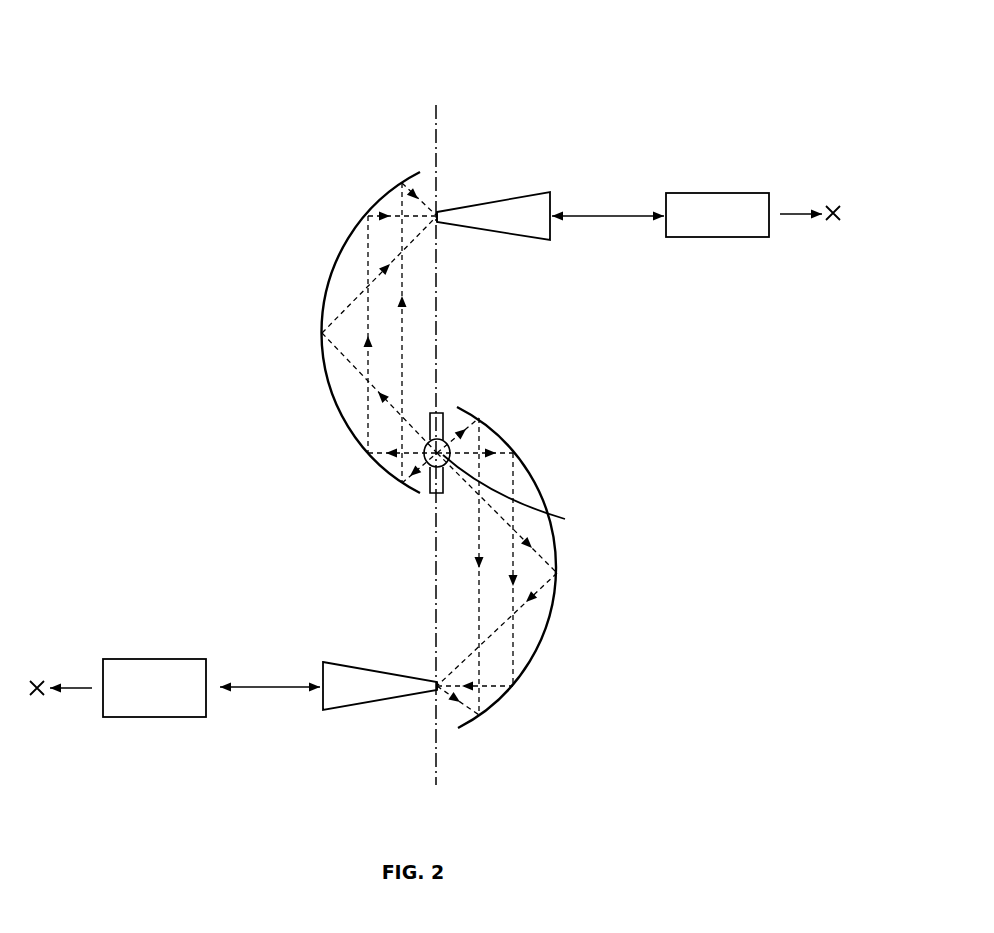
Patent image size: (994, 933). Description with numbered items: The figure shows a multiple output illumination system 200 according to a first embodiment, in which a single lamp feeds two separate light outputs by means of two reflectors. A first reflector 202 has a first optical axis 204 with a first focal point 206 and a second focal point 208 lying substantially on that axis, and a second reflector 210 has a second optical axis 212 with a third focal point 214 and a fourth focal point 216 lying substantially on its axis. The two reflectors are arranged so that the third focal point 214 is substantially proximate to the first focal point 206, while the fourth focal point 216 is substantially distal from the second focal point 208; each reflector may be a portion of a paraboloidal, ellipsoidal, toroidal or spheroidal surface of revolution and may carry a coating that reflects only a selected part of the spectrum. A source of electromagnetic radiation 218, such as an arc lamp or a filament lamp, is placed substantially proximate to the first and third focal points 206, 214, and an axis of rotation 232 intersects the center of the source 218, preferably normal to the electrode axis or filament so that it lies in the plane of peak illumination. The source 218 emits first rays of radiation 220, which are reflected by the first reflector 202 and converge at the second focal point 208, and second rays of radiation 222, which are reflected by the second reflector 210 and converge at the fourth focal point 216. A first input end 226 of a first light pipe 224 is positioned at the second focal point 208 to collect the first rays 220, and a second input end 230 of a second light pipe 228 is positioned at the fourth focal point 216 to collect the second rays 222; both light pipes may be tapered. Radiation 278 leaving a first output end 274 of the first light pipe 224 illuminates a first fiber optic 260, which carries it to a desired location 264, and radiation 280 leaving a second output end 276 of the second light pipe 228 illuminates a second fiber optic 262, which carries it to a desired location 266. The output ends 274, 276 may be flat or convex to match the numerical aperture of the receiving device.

The multiple output illumination system 200 is at (199, 52).
The first reflector 202 is at (532, 475).
The first optical axis 204 is at (440, 760).
The first focal point 206 is at (575, 493).
The second focal point 208 is at (428, 692).
The second reflector 210 is at (345, 245).
The second optical axis 212 is at (436, 158).
The third focal point 214 is at (575, 493).
The fourth focal point 216 is at (509, 194).
The source of electromagnetic radiation 218 is at (430, 499).
The first rays of radiation 220 is at (477, 600).
The second rays of radiation 222 is at (403, 320).
The first light pipe 224 is at (351, 674).
The first input end 226 is at (362, 712).
The second light pipe 228 is at (532, 224).
The second input end 230 is at (447, 212).
The axis of rotation 232 is at (548, 517).
The first fiber optic 260 is at (176, 670).
The second fiber optic 262 is at (710, 200).
The desired location 264 is at (37, 678).
The desired location 266 is at (835, 203).
The first output end 274 is at (313, 690).
The second output end 276 is at (560, 222).
The radiation 278 is at (265, 685).
The radiation 280 is at (632, 215).